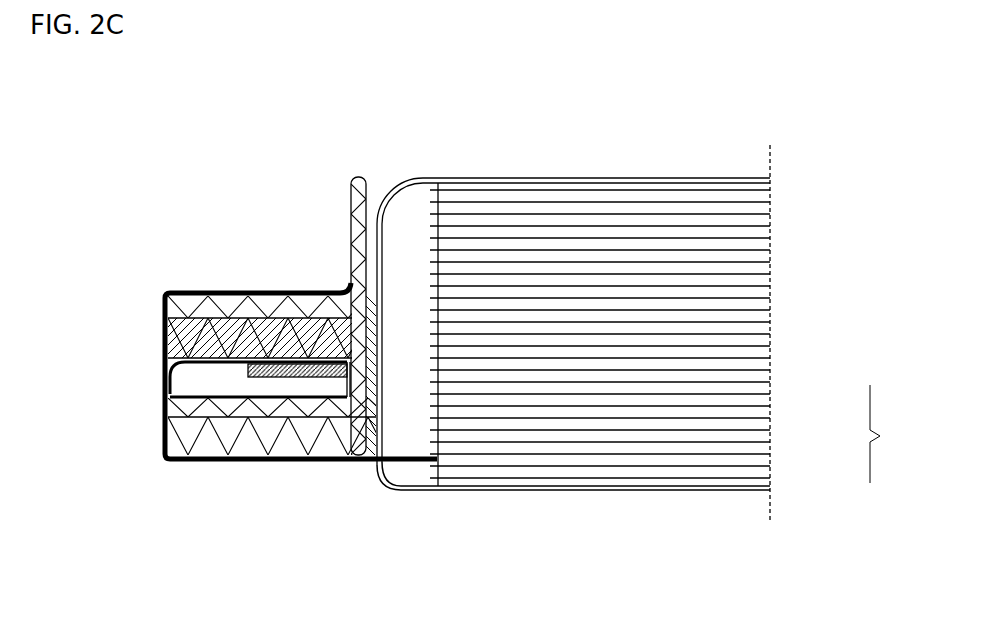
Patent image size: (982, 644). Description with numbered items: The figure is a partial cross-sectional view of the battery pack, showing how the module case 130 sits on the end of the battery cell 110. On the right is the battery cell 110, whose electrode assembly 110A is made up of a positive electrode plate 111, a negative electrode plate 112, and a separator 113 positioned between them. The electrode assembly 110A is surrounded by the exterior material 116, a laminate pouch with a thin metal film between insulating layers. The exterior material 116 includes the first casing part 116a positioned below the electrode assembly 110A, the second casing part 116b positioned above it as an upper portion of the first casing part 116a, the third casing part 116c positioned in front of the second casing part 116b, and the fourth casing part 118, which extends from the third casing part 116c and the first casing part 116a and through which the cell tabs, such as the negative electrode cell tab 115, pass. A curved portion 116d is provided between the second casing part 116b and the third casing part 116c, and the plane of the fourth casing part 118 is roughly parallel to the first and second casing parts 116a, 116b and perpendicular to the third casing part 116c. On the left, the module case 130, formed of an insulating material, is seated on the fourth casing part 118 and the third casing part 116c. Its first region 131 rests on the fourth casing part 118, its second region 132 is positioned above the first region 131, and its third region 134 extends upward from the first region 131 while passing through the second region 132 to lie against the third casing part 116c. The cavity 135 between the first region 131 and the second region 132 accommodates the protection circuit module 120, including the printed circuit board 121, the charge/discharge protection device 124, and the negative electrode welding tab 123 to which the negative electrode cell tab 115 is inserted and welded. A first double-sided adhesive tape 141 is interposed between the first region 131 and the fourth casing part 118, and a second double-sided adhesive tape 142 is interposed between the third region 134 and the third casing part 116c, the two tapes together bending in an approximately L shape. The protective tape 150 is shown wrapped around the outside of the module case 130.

The battery cell 110 is at (782, 241).
The electrode assembly 110A is at (906, 434).
The positive electrode plate 111 is at (755, 424).
The negative electrode plate 112 is at (760, 448).
The separator 113 is at (758, 436).
The negative electrode cell tab 115 is at (413, 468).
The exterior material 116 is at (677, 489).
The first casing part 116a is at (575, 492).
The second casing part 116b is at (566, 176).
The third casing part 116c is at (385, 258).
The curved portion 116d is at (388, 205).
The fourth casing part 118 is at (350, 466).
The protection circuit module 120 is at (164, 353).
The printed circuit board 121 is at (176, 327).
The negative electrode welding tab 123 is at (293, 378).
The charge/discharge protection device 124 is at (172, 377).
The module case 130 is at (181, 292).
The first region 131 is at (240, 408).
The second region 132 is at (255, 300).
The third region 134 is at (348, 208).
The cavity 135 is at (173, 395).
The first double-sided adhesive tape 141 is at (278, 440).
The second double-sided adhesive tape 142 is at (375, 213).
The protective tape 150 is at (190, 470).